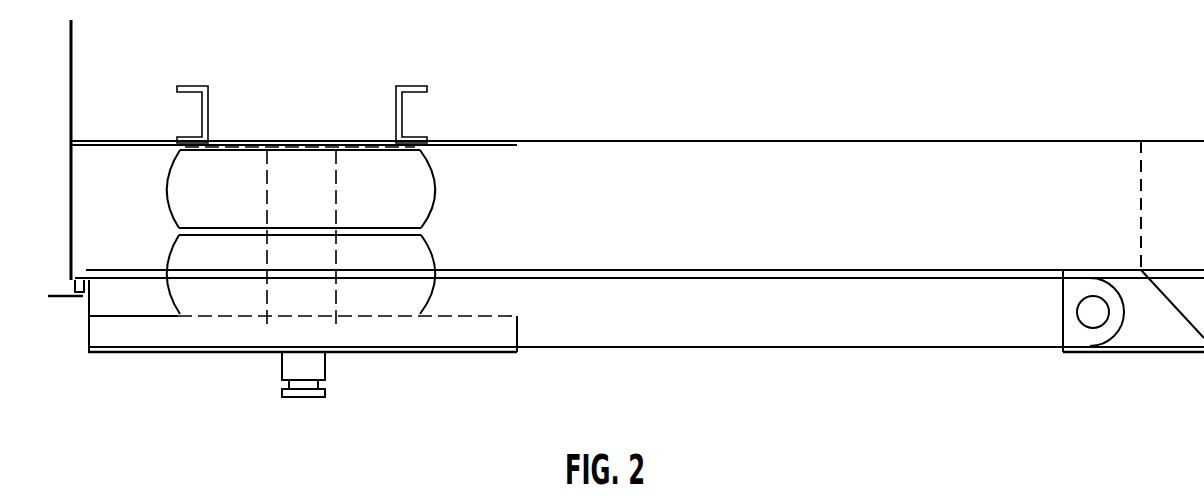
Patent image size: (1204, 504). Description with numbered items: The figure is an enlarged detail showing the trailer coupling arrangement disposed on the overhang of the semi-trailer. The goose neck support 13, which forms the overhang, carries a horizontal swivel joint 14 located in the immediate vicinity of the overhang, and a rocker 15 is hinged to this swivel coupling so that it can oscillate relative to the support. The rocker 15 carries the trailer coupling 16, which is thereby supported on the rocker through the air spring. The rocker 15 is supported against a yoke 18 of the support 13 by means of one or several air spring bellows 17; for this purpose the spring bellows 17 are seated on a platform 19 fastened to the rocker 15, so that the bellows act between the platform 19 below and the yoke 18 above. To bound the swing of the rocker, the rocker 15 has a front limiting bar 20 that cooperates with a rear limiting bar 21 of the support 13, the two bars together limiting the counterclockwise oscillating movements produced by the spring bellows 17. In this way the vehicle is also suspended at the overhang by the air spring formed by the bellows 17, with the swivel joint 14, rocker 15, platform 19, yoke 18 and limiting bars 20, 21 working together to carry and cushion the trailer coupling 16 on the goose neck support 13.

The goose neck support 13 is at (983, 155).
The horizontal swivel joint 14 is at (1095, 320).
The rocker 15 is at (748, 337).
The trailer coupling 16 is at (320, 372).
The air spring bellows 17 is at (430, 247).
The yoke 18 is at (309, 143).
The platform 19 is at (478, 318).
The front limiting bar 20 is at (77, 278).
The rear limiting bar 21 is at (76, 299).